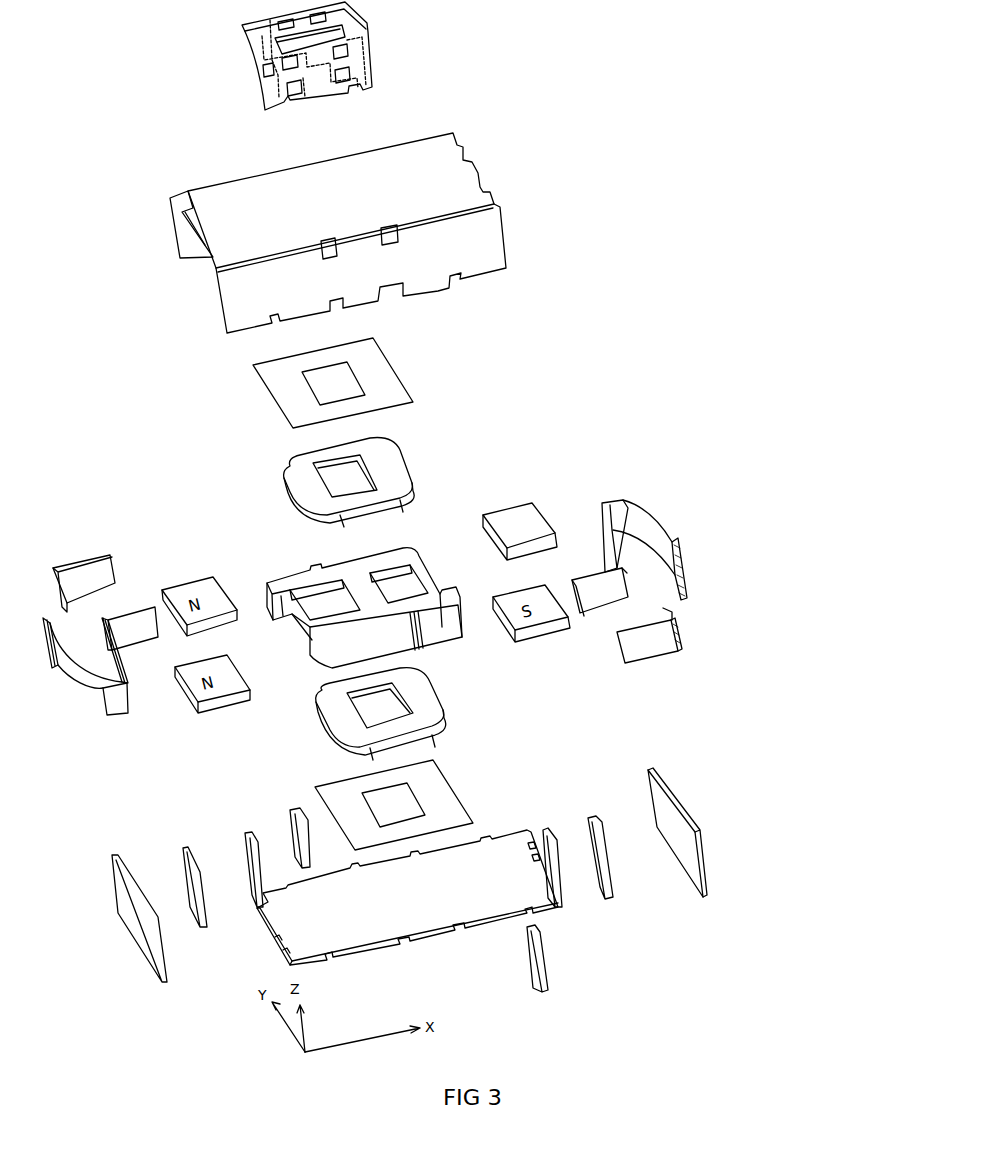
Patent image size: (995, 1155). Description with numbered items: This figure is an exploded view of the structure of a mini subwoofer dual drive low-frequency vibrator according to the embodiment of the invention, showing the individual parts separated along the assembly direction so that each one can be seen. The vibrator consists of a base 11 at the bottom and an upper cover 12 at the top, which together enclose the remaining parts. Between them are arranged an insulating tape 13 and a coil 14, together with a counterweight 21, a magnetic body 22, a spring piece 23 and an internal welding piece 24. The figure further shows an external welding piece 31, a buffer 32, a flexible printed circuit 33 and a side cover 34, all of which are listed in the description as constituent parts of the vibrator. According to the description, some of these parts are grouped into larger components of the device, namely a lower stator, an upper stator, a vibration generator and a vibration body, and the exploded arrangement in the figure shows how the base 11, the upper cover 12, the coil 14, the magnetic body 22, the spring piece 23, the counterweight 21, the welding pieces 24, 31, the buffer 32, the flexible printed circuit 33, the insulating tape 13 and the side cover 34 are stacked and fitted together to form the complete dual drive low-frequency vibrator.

The base 11 is at (528, 895).
The upper cover 12 is at (468, 245).
The insulating tape 13 is at (443, 800).
The coil 14 is at (430, 706).
The counterweight 21 is at (437, 637).
The magnetic body 22 is at (542, 523).
The spring piece 23 is at (685, 555).
The internal welding piece 24 is at (667, 637).
The external welding piece 31 is at (612, 867).
The buffer 32 is at (553, 982).
The flexible printed circuit 33 is at (367, 65).
The side cover 34 is at (683, 813).